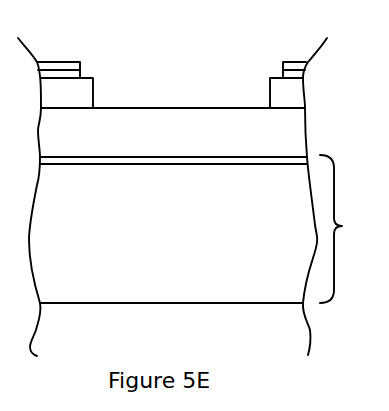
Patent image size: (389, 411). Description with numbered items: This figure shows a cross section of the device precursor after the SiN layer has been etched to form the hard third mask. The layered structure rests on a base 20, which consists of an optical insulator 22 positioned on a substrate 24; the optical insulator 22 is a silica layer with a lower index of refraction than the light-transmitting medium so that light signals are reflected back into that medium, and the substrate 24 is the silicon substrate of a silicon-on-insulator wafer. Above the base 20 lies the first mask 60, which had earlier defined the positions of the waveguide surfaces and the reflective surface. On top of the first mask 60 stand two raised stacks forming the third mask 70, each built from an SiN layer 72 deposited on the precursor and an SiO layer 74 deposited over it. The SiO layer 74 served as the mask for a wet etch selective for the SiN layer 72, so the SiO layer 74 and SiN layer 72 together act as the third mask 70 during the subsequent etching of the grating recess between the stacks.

The base 20 is at (348, 229).
The optical insulator 22 is at (96, 160).
The substrate 24 is at (118, 283).
The first mask 60 is at (288, 96).
The third mask 70 is at (315, 79).
The SiN layer 72 is at (283, 75).
The SiO layer 74 is at (58, 66).